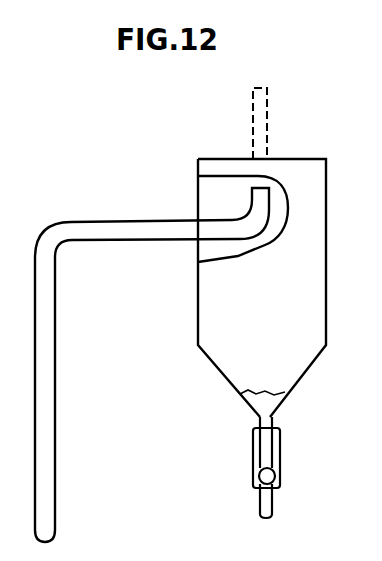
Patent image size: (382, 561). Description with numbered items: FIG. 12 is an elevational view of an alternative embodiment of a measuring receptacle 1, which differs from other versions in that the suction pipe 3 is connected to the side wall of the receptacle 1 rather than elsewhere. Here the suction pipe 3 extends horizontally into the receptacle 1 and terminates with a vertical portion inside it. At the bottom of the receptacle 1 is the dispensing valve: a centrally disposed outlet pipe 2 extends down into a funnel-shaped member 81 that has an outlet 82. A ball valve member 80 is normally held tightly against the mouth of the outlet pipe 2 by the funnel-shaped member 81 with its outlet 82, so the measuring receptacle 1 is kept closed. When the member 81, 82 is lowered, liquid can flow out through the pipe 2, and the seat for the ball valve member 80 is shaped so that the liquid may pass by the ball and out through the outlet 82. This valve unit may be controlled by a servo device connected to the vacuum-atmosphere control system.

The measuring receptacle 1 is at (312, 266).
The outlet pipe 2 is at (270, 420).
The suction pipe 3 is at (122, 230).
The ball valve member 80 is at (267, 477).
The funnel-shaped member 81 is at (280, 442).
The outlet 82 is at (270, 504).